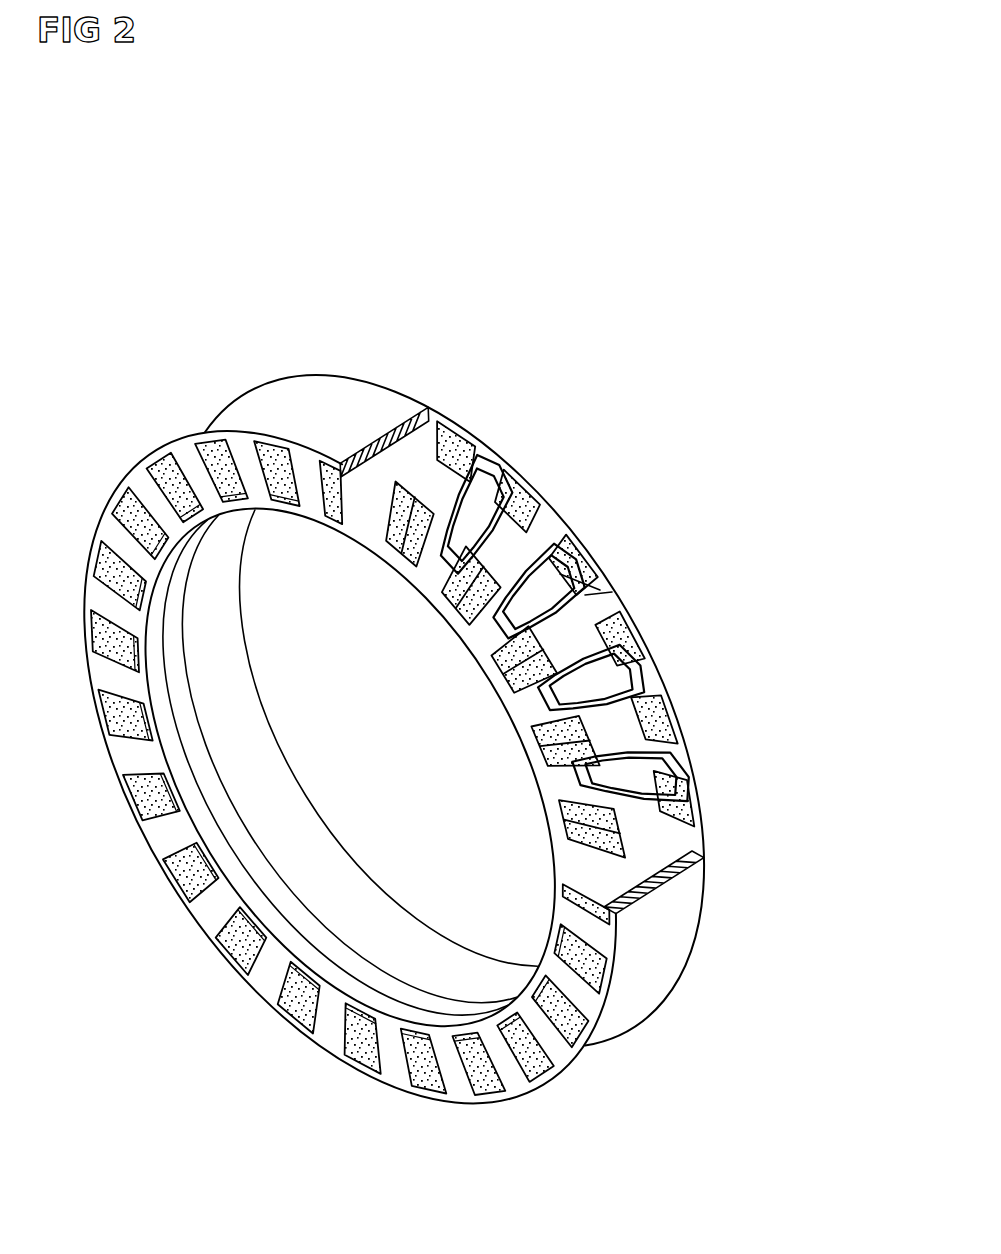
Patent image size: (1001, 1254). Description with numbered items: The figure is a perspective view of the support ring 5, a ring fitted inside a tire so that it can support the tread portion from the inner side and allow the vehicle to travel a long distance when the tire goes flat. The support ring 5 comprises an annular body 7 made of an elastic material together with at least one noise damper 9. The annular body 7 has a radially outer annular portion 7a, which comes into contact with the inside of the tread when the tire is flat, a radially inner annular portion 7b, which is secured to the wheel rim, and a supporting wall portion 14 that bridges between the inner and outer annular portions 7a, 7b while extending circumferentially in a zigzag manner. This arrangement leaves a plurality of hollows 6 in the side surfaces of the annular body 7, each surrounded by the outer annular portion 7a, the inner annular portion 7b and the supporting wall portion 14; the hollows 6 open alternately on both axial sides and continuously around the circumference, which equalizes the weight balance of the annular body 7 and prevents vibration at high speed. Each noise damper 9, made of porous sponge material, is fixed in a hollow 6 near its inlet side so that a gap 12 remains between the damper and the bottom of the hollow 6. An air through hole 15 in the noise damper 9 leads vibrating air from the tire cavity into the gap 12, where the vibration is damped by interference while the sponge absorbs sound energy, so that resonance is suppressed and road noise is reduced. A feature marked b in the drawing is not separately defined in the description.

The support ring 5 is at (430, 228).
The annular body 7 is at (393, 383).
The radially outer annular portion 7a is at (343, 393).
The radially inner annular portion 7b is at (228, 680).
The noise damper 9 is at (463, 437).
The hollows 6 is at (640, 645).
The gap 12 is at (612, 592).
The supporting wall portion 14 is at (557, 527).
The air through hole 15 is at (453, 613).
The slot opening width b is at (530, 593).